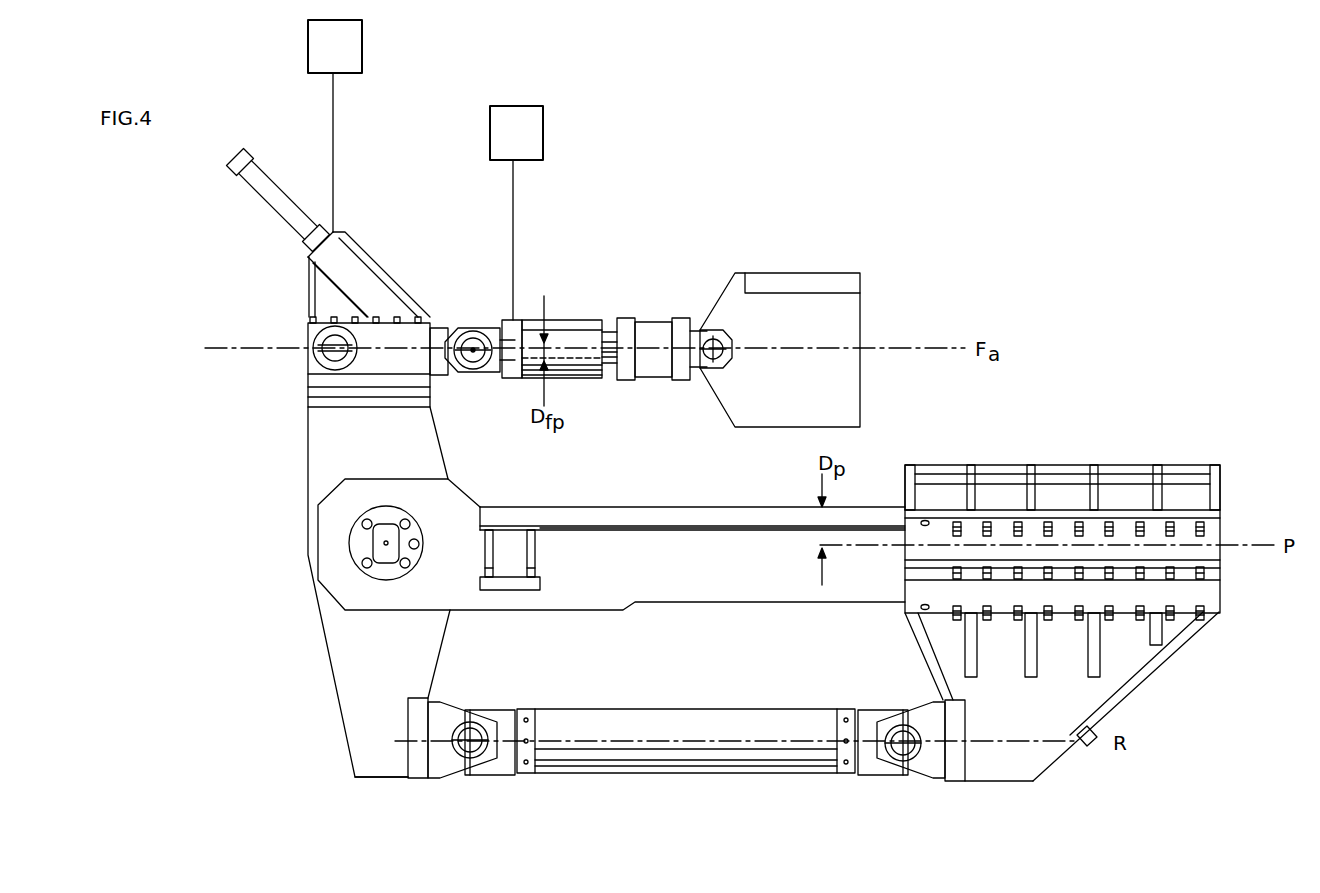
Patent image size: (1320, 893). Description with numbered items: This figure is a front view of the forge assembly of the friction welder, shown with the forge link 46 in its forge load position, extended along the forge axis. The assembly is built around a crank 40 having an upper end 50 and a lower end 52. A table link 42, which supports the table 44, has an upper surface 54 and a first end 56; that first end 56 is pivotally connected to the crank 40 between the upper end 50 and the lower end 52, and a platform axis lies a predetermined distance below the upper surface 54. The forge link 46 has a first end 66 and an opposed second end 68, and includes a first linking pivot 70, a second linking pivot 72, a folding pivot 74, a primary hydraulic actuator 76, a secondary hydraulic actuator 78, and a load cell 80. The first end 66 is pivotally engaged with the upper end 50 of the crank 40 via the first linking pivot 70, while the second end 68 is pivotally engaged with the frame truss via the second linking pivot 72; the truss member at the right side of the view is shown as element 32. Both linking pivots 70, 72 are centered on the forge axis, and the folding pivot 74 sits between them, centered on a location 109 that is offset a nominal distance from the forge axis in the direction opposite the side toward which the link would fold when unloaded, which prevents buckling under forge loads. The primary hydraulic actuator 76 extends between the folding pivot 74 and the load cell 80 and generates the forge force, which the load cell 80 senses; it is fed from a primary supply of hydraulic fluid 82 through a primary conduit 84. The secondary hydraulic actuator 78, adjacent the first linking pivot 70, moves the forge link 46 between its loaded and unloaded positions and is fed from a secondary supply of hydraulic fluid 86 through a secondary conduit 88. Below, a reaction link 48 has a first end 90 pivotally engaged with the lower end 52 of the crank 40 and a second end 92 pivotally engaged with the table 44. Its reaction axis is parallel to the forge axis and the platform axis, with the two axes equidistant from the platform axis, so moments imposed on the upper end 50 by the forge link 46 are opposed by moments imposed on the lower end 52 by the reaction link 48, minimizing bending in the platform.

The ram / slide body 32 is at (857, 322).
The crank 40 is at (337, 630).
The table link 42 is at (597, 543).
The table 44 is at (1118, 487).
The forge link 46 is at (603, 312).
The reaction link 48 is at (693, 710).
The upper end 50 is at (317, 368).
The lower end 52 is at (378, 763).
The upper surface 54 is at (725, 502).
The first end 56 is at (333, 560).
The first end 66 is at (300, 359).
The second end 68 is at (722, 363).
The first linking pivot 70 is at (316, 344).
The second linking pivot 72 is at (717, 340).
The folding pivot 74 is at (471, 333).
The primary hydraulic actuator 76 is at (562, 316).
The secondary hydraulic actuator 78 is at (283, 210).
The load cell 80 is at (653, 327).
The primary supply of hydraulic fluid 82 is at (528, 145).
The primary conduit 84 is at (513, 182).
The secondary supply of hydraulic fluid 86 is at (347, 59).
The secondary conduit 88 is at (333, 97).
The first end 90 is at (462, 708).
The second end 92 is at (927, 705).
The location 109 is at (474, 356).